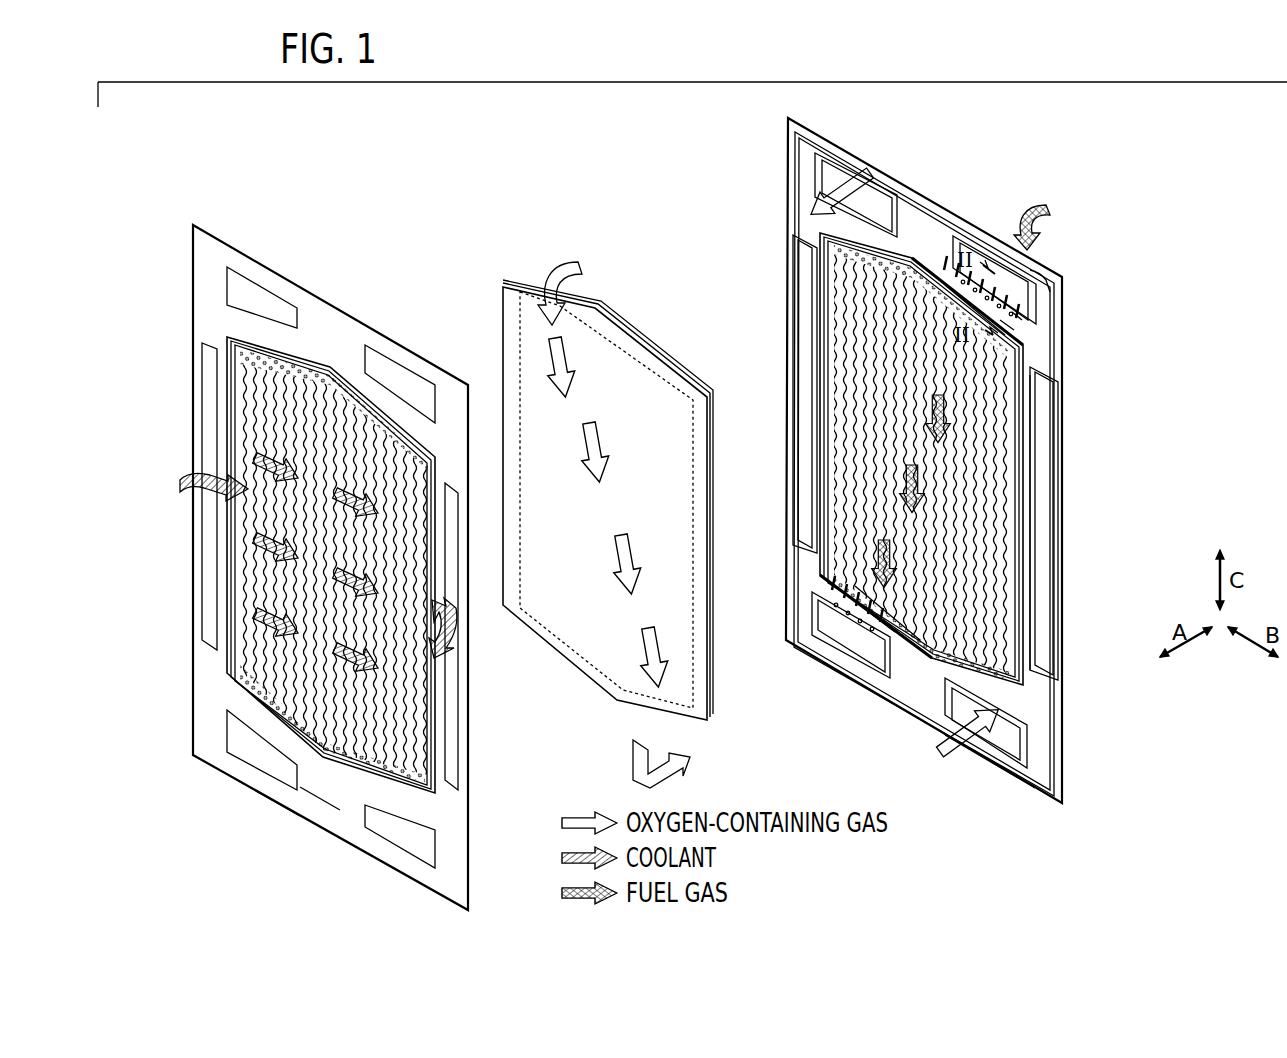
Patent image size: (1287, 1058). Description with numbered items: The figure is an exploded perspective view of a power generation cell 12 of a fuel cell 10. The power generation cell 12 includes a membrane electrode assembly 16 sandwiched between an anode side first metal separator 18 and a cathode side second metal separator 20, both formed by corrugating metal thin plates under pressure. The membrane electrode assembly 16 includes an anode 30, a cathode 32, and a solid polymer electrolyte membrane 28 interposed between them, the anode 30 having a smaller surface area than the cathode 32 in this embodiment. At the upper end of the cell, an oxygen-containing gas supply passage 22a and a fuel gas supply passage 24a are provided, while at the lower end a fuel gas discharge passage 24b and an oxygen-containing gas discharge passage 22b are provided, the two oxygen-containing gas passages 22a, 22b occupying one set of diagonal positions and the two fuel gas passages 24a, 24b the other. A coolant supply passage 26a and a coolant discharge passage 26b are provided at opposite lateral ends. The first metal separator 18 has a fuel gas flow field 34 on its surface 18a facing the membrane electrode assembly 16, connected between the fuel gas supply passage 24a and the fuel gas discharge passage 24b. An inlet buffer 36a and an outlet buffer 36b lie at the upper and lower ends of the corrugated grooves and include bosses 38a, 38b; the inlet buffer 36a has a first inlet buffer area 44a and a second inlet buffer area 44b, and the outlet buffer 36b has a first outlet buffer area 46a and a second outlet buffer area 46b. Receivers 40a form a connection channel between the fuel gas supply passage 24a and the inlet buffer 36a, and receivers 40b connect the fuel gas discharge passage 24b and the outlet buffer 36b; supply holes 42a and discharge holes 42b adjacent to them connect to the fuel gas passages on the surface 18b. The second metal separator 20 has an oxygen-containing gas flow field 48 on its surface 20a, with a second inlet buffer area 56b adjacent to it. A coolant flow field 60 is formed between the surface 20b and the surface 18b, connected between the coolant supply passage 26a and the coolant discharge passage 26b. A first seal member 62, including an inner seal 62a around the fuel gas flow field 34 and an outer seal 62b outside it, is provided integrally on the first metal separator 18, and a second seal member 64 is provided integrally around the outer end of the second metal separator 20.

The fuel cell 10 is at (401, 227).
The power generation cell 12 is at (362, 227).
The membrane electrode assembly 16 is at (505, 245).
The first metal separator 18 is at (786, 142).
The surface of first metal separator 18a is at (1010, 762).
The surface of first metal separator 18b is at (1040, 797).
The second metal separator 20 is at (190, 222).
The surface of second metal separator 20a is at (328, 830).
The surface of second metal separator 20b is at (302, 797).
The oxygen-containing gas supply passage 22a is at (248, 298).
The oxygen-containing gas discharge passage 22b is at (437, 843).
The fuel gas supply passage 24a is at (388, 372).
The fuel gas discharge passage 24b is at (230, 738).
The coolant supply passage 26a is at (205, 572).
The coolant discharge passage 26b is at (452, 733).
The solid polymer electrolyte membrane 28 is at (665, 350).
The anode 30 is at (677, 388).
The cathode 32 is at (628, 337).
The fuel gas flow field 34 is at (855, 320).
The inlet buffer 36a is at (975, 150).
The outlet buffer 36b is at (900, 745).
The bosses 38a is at (840, 282).
The bosses 38b is at (1000, 642).
The receivers 40a is at (1025, 330).
The receivers 40b is at (828, 590).
The supply holes 42a is at (1018, 312).
The discharge holes 42b is at (835, 614).
The first inlet buffer area 44a is at (938, 282).
The second inlet buffer area 44b is at (905, 262).
The first outlet buffer area 46a is at (862, 637).
The second outlet buffer area 46b is at (900, 642).
The oxygen-containing gas flow field 48 is at (245, 452).
The second inlet buffer area 56b is at (1048, 514).
The coolant flow field 60 is at (258, 428).
The first seal member 62 is at (806, 662).
The inner seal 62a is at (1025, 494).
The outer seal 62b is at (1045, 280).
The second seal member 64 is at (267, 797).